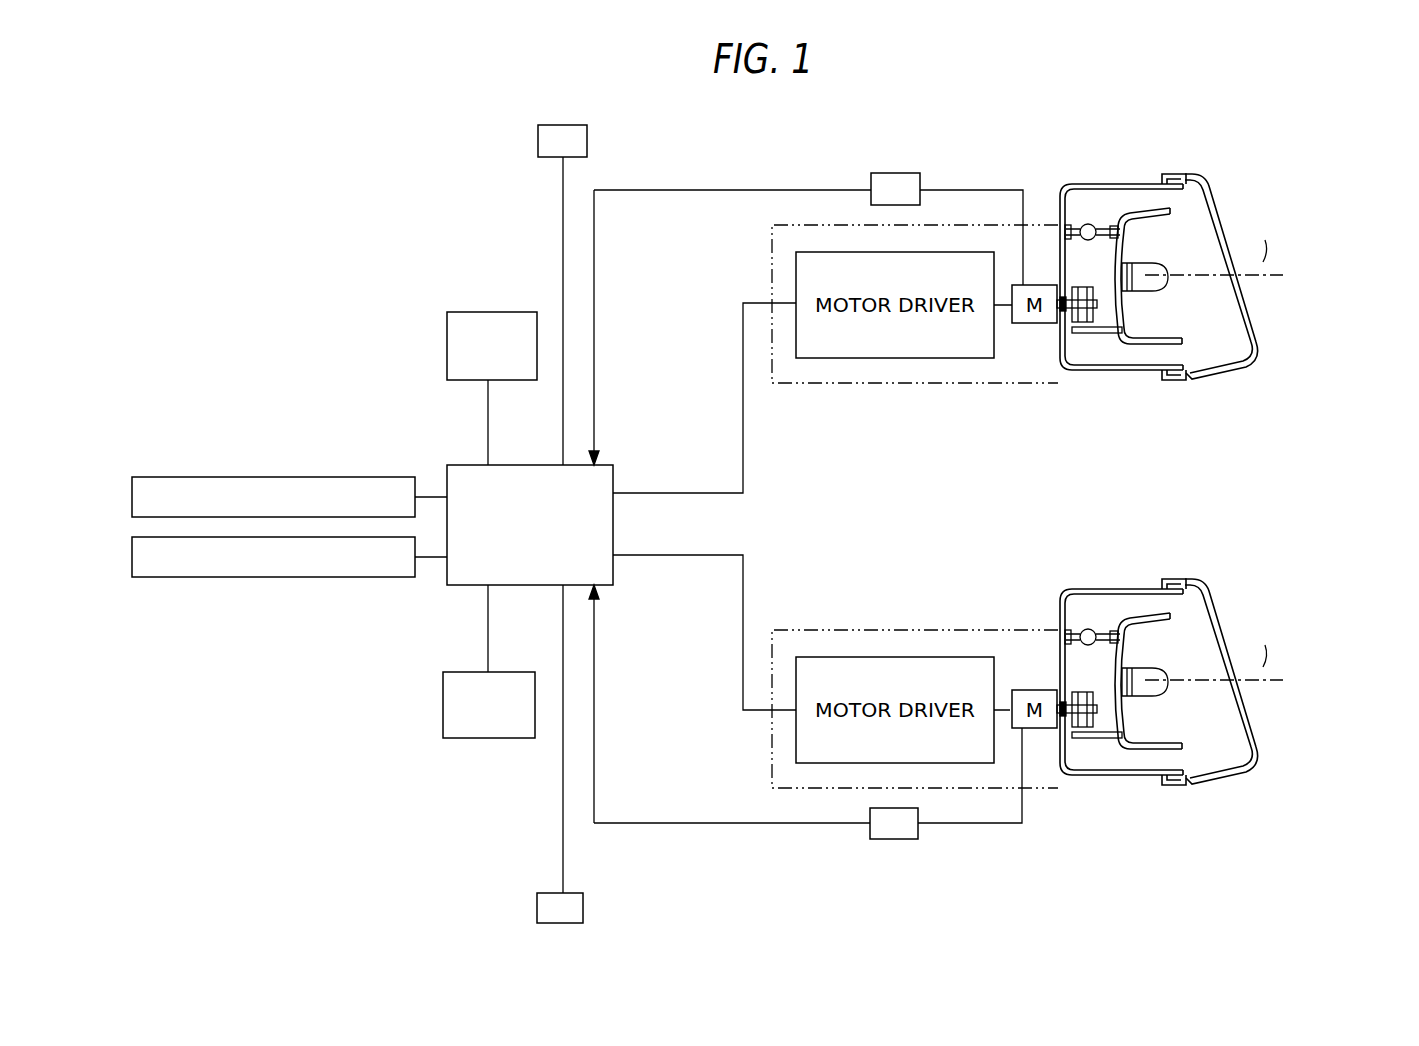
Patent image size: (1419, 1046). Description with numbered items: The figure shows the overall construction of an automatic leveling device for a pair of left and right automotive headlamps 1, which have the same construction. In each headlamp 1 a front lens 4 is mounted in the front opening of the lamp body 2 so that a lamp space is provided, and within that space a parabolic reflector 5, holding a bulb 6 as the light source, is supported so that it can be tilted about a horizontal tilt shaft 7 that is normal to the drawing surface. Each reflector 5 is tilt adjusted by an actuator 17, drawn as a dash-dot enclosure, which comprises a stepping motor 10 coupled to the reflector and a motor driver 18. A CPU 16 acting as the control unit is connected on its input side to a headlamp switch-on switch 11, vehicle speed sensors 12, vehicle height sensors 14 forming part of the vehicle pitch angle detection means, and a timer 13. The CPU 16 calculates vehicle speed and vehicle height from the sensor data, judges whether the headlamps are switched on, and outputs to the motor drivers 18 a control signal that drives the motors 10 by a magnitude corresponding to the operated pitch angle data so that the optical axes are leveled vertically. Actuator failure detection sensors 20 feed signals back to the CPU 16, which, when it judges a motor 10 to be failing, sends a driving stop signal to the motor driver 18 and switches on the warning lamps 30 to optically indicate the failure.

The headlamp 1 is at (1218, 459).
The lamp housing 2 is at (1075, 184).
The front lens 4 is at (1216, 222).
The parabolic reflector 5 is at (1137, 209).
The bulb 6 is at (1153, 262).
The horizontal tilt shaft 7 is at (1086, 226).
The stepping motor 10 is at (1035, 323).
The headlamp switch-on switch 11 is at (447, 346).
The vehicle speed sensor 12 is at (272, 477).
The timer 13 is at (443, 706).
The vehicle height sensor 14 is at (272, 577).
The CPU 16 is at (615, 524).
The actuator 17 is at (772, 246).
The motor driver 18 is at (893, 358).
The actuator failure detection sensor 20 is at (894, 173).
The warning lamp 30 is at (538, 142).